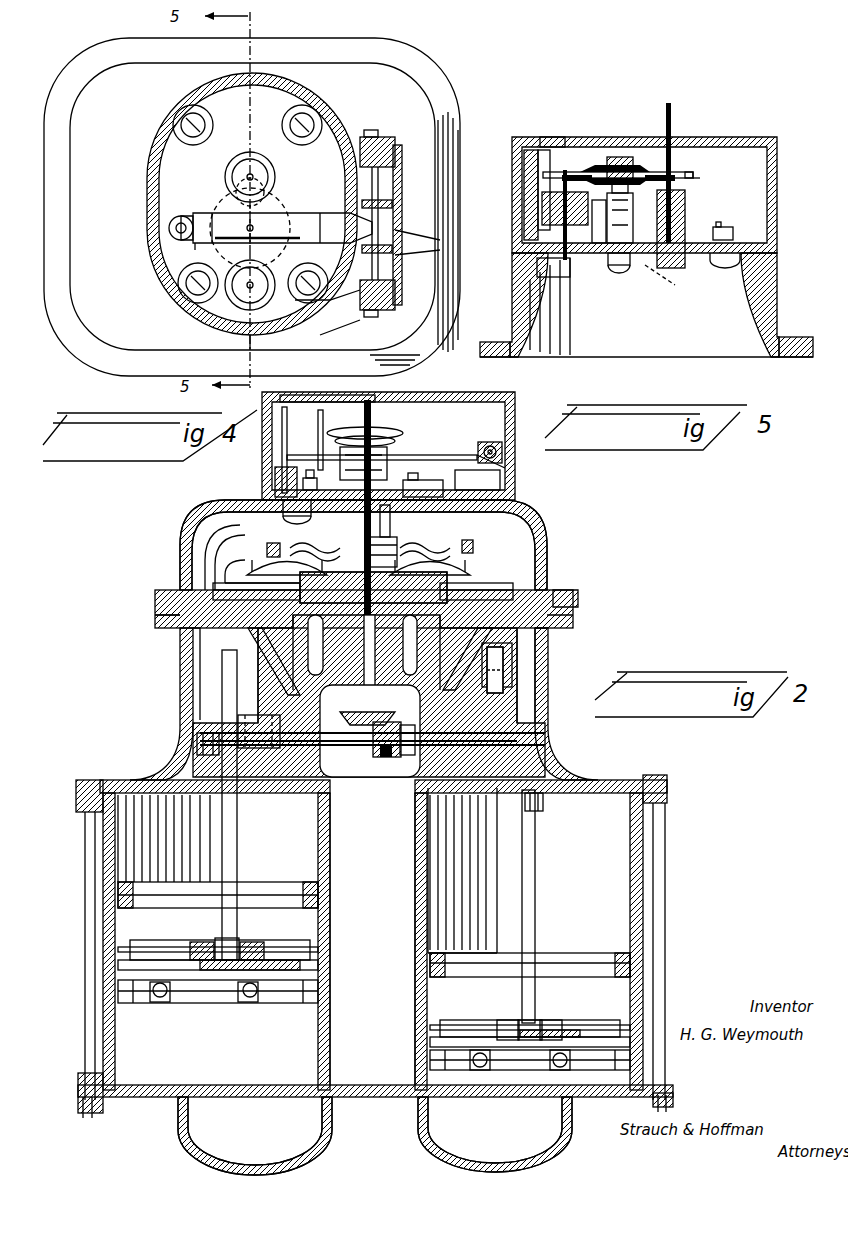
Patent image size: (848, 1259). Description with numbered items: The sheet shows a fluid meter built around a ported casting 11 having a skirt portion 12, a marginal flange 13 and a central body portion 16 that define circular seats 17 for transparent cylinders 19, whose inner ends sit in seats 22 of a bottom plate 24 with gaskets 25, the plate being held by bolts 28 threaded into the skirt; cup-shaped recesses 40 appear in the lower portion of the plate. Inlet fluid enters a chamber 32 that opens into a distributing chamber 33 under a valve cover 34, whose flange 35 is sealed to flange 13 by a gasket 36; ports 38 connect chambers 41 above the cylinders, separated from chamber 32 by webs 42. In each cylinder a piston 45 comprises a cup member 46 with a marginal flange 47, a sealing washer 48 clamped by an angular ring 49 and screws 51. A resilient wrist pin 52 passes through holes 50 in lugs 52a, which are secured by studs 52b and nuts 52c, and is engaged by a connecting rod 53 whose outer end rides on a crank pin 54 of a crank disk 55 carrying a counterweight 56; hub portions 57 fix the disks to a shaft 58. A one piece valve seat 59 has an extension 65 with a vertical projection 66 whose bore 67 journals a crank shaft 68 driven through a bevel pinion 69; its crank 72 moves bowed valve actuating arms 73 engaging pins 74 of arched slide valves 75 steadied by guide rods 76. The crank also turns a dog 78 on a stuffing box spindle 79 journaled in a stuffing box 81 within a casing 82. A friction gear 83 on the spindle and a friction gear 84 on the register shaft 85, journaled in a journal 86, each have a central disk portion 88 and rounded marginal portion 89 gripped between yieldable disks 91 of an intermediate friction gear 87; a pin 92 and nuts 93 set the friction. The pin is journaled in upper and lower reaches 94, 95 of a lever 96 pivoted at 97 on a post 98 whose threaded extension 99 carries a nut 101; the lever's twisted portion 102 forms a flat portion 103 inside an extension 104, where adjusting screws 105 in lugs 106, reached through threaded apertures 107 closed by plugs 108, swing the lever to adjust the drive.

In FIG. 2, the ported casting 11 is at (180, 660).
In FIG. 2, the skirt portion 12 is at (552, 690).
In FIG. 2, the marginal flange 13 is at (575, 615).
In FIG. 2, the central body portion 16 is at (345, 800).
In FIG. 2, the circular seats 17 is at (295, 783).
In FIG. 2, the transparent cylinders 19 is at (330, 870).
In FIG. 2, the circular seats 22 is at (115, 1075).
In FIG. 2, the bottom plate 24 is at (380, 1097).
In FIG. 2, the gaskets 25 is at (100, 782).
In FIG. 2, the bolts 28 is at (90, 950).
In FIG. 2, the chamber 32 is at (360, 748).
In FIG. 2, the distributing chamber 33 is at (228, 555).
In FIG. 4, the valve cover 34 is at (150, 200).
In FIG. 5, the valve cover 34 is at (780, 300).
In FIG. 2, the valve cover 34 is at (185, 522).
In FIG. 4, the flange 35 is at (455, 120).
In FIG. 5, the flange 35 is at (488, 342).
In FIG. 2, the gasket 36 is at (155, 608).
In FIG. 2, the ports 38 is at (293, 680).
In FIG. 2, the oil cup 40 is at (375, 1135).
In FIG. 2, the chambers 41 is at (222, 680).
In FIG. 2, the ribs or webs 42 is at (258, 640).
In FIG. 2, the piston 45 is at (260, 882).
In FIG. 2, the metallic cup member 46 is at (200, 997).
In FIG. 2, the outer marginal flange 47 is at (270, 940).
In FIG. 2, the fluid sealing washer 48 is at (680, 1015).
In FIG. 2, the angular metallic ring 49 is at (330, 880).
In FIG. 2, the holes 50 is at (130, 945).
In FIG. 2, the screws 51 is at (140, 895).
In FIG. 2, the resilient wrist pin 52 is at (200, 942).
In FIG. 2, the lugs 52a is at (515, 1020).
In FIG. 2, the threaded studs 52b is at (318, 960).
In FIG. 2, the nuts 52c is at (165, 1002).
In FIG. 2, the connecting rod 53 is at (237, 840).
In FIG. 2, the crank pin 54 is at (205, 757).
In FIG. 2, the crank disk 55 is at (560, 590).
In FIG. 2, the counterweight 56 is at (238, 725).
In FIG. 2, the hub portions 57 is at (487, 690).
In FIG. 2, the shaft 58 is at (345, 715).
In FIG. 2, the valve seat 59 is at (235, 580).
In FIG. 2, the extension 65 is at (368, 545).
In FIG. 2, the vertical projection 66 is at (385, 720).
In FIG. 2, the vertical central bore 67 is at (330, 600).
In FIG. 2, the crank shaft 68 is at (430, 603).
In FIG. 2, the bevel pinion 69 is at (378, 748).
In FIG. 2, the crank 72 is at (392, 528).
In FIG. 2, the valve actuating arms 73 is at (315, 545).
In FIG. 2, the pins 74 is at (488, 528).
In FIG. 2, the slide valves 75 is at (280, 575).
In FIG. 2, the guide rod 76 is at (275, 600).
In FIG. 5, the dog 78 is at (565, 277).
In FIG. 2, the dog 78 is at (415, 477).
In FIG. 4, the stuffing box spindle 79 is at (270, 280).
In FIG. 5, the stuffing box spindle 79 is at (556, 192).
In FIG. 2, the stuffing box spindle 79 is at (330, 430).
In FIG. 5, the stuffing box 81 is at (545, 190).
In FIG. 2, the stuffing box 81 is at (388, 460).
In FIG. 4, the casing 82 is at (208, 120).
In FIG. 5, the casing 82 is at (775, 140).
In FIG. 2, the casing 82 is at (510, 402).
In FIG. 4, the friction gear 83 is at (200, 300).
In FIG. 5, the friction gear 83 is at (545, 137).
In FIG. 4, the friction gear 84 is at (270, 168).
In FIG. 5, the friction gear 84 is at (695, 172).
In FIG. 4, the register shaft 85 is at (262, 175).
In FIG. 5, the register shaft 85 is at (705, 100).
In FIG. 2, the register shaft 85 is at (375, 427).
In FIG. 5, the journal 86 is at (685, 212).
In FIG. 4, the friction gear 87 is at (275, 208).
In FIG. 5, the friction gear 87 is at (667, 162).
In FIG. 2, the friction gear 87 is at (372, 425).
In FIG. 4, the central disk portion 88 is at (238, 176).
In FIG. 5, the central disk portion 88 is at (700, 160).
In FIG. 4, the transverse circular marginal portion 89 is at (255, 160).
In FIG. 5, the transverse circular marginal portion 89 is at (700, 178).
In FIG. 5, the yieldable disks 91 is at (600, 165).
In FIG. 5, the pin 92 is at (622, 157).
In FIG. 5, the nuts 93 is at (630, 190).
In FIG. 4, the upper reach 94 is at (205, 222).
In FIG. 5, the upper reach 94 is at (570, 160).
In FIG. 2, the upper reach 94 is at (290, 420).
In FIG. 5, the lower reach 95 is at (600, 215).
In FIG. 2, the lower reach 95 is at (313, 478).
In FIG. 4, the lever 96 is at (212, 243).
In FIG. 2, the lever 96 is at (477, 483).
In FIG. 4, the pivot 97 is at (181, 216).
In FIG. 2, the pivot 97 is at (300, 455).
In FIG. 5, the post 98 is at (633, 215).
In FIG. 2, the post 98 is at (275, 480).
In FIG. 5, the threaded extension 99 is at (666, 278).
In FIG. 4, the nut 101 is at (398, 145).
In FIG. 5, the nut 101 is at (625, 270).
In FIG. 2, the nut 101 is at (283, 505).
In FIG. 4, the twisted portion 102 is at (330, 216).
In FIG. 2, the vertical flat portion 103 is at (490, 442).
In FIG. 4, the extension 104 is at (348, 302).
In FIG. 2, the extension 104 is at (350, 400).
In FIG. 4, the adjusting screws 105 is at (368, 200).
In FIG. 2, the adjusting screws 105 is at (505, 468).
In FIG. 4, the lugs 106 is at (440, 247).
In FIG. 4, the threaded apertures 107 is at (330, 345).
In FIG. 4, the threaded plugs 108 is at (368, 130).